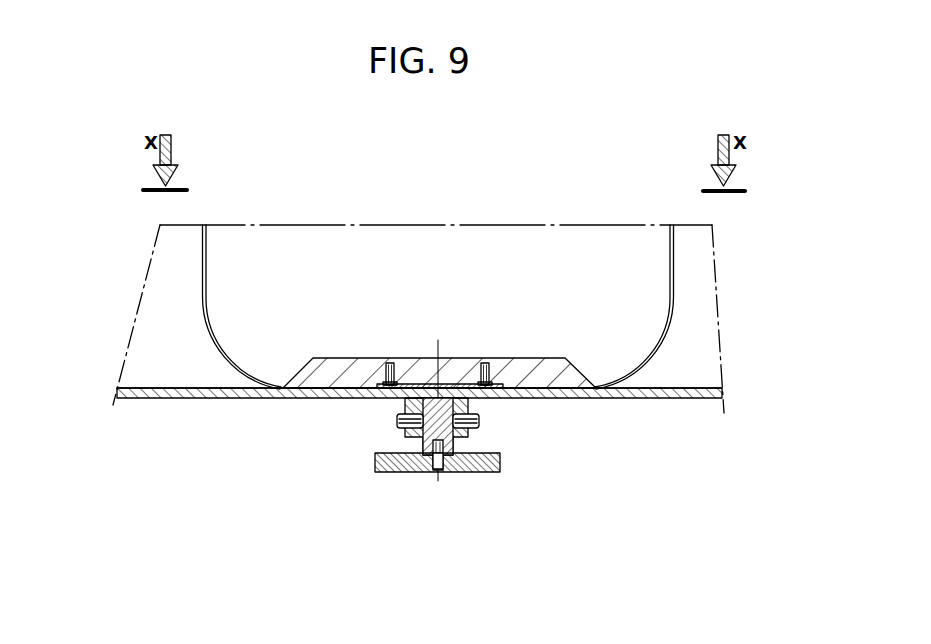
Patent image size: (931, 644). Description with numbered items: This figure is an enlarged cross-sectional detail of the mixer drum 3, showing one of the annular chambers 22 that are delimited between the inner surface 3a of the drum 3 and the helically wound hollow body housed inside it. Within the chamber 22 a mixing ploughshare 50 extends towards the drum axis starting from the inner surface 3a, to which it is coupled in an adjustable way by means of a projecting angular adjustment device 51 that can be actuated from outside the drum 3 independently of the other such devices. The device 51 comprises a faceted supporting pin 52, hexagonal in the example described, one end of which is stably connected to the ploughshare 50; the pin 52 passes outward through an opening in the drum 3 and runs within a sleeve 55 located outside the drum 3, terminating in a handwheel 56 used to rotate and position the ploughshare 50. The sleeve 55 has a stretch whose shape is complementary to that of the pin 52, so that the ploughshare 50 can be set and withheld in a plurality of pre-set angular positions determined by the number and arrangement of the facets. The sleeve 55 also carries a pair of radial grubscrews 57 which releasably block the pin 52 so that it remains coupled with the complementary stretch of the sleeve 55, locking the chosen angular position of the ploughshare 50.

The drum 3 is at (660, 416).
The inner surface of the drum 3a is at (680, 386).
The annular chambers 22 is at (230, 305).
The mixing ploughshare 50 is at (521, 353).
The angular adjustment device 51 is at (362, 407).
The faceted supporting pin 52 is at (428, 380).
The sleeve 55 is at (410, 439).
The handwheel 56 is at (473, 473).
The radial grubscrews 57 is at (396, 423).